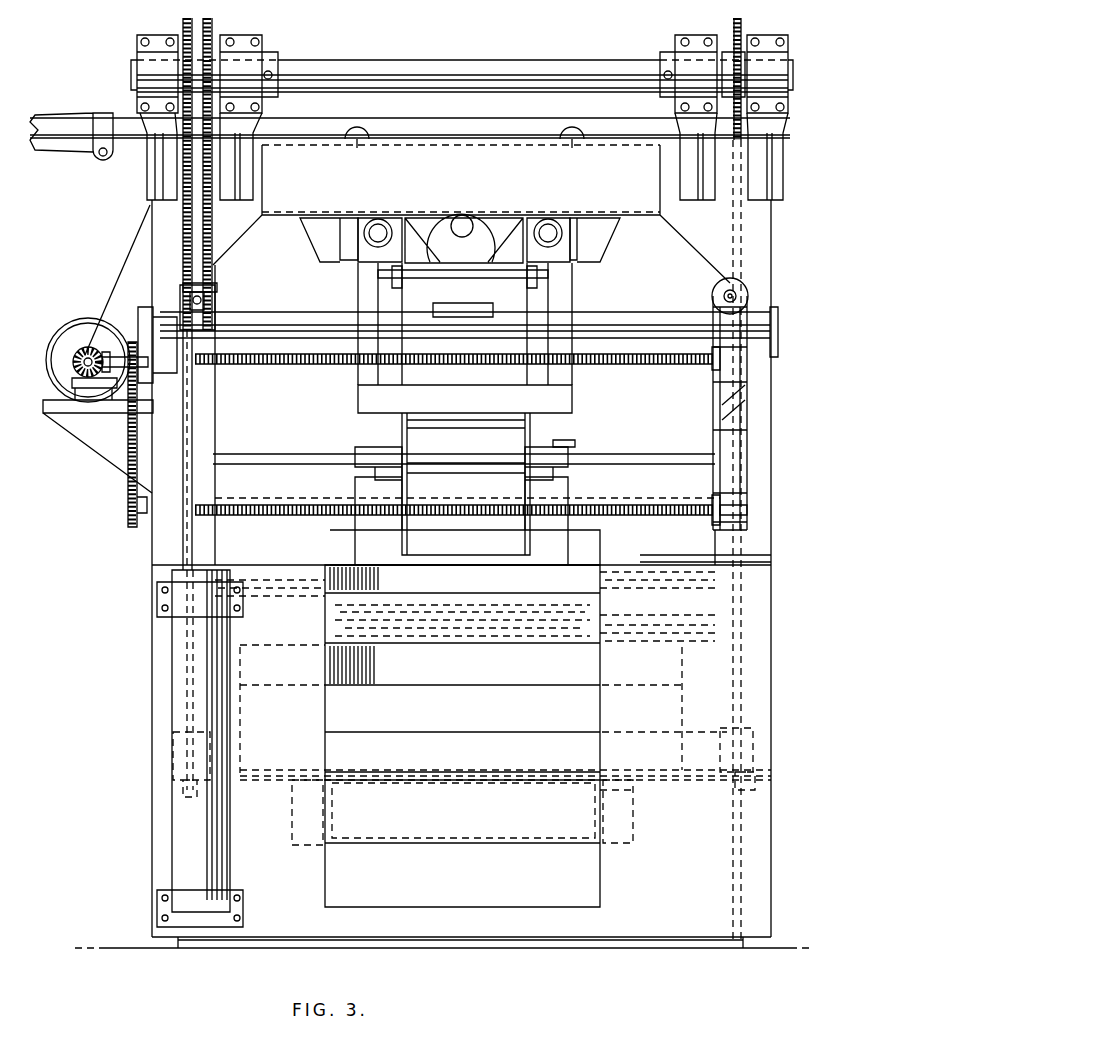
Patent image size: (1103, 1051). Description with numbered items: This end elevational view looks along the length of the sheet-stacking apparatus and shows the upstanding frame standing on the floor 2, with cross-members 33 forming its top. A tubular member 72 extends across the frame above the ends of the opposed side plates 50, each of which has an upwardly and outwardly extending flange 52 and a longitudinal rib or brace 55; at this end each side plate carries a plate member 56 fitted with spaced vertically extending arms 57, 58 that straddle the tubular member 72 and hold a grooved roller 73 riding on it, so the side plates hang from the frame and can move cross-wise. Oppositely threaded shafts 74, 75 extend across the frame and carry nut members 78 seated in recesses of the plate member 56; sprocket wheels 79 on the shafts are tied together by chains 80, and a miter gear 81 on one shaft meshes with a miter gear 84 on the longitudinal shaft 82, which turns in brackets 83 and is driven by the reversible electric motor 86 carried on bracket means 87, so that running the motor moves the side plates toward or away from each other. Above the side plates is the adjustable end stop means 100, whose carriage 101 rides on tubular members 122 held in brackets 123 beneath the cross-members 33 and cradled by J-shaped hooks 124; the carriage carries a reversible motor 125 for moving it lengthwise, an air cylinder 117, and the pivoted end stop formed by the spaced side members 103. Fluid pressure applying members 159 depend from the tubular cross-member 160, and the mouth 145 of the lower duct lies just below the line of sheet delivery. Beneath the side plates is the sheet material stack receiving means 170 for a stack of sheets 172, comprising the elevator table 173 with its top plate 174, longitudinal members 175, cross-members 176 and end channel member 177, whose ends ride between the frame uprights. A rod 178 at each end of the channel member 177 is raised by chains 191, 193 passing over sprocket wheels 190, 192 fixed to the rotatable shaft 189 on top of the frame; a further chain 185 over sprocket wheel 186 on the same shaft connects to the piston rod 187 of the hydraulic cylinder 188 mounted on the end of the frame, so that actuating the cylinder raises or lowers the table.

The floor 2 is at (487, 948).
The cross-members 33 is at (628, 213).
The side plates 50 is at (712, 440).
The flange 52 is at (748, 398).
The longitudinal rib or brace 55 is at (750, 520).
The plate member 56 is at (713, 474).
The vertically extending arm 57 is at (748, 422).
The vertically extending arm 58 is at (778, 347).
The tubular member 72 is at (625, 313).
The grooved rollers 73 is at (712, 296).
The screw threaded shaft 74 is at (292, 366).
The screw threaded shaft 75 is at (596, 516).
The nut member 78 is at (712, 520).
The sprocket wheel 79 is at (134, 340).
The chains 80 is at (128, 490).
The miter gear 81 is at (100, 350).
The shaft or rod 82 is at (90, 388).
The brackets 83 is at (125, 270).
The miter gear 84 is at (72, 338).
The electric motor 86 is at (80, 340).
The bracket means 87 is at (72, 432).
The adjustable end stop means 100 is at (398, 440).
The carriage 101 is at (572, 387).
The side members 103 is at (528, 452).
The air cylinder 117 is at (482, 310).
The tubular members 122 is at (540, 218).
The brackets 123 is at (578, 221).
The J-shaped brackets or hooks 124 is at (598, 247).
The electric motor 125 is at (486, 205).
The mouth or opening 145 is at (545, 444).
The fluid pressure applying members 159 is at (572, 140).
The tubular cross-member 160 is at (482, 125).
The sheet material stack receiving means 170 is at (465, 736).
The stack of sheets 172 is at (688, 640).
The elevator table 173 is at (636, 800).
The top plate 174 is at (553, 776).
The longitudinal members 175 is at (580, 815).
The cross-members 176 is at (292, 812).
The channel member 177 is at (270, 732).
The rod 178 is at (758, 562).
The chain 185 is at (215, 274).
The sprocket wheel 186 is at (213, 24).
The piston rod 187 is at (215, 410).
The hydraulic cylinder 188 is at (175, 738).
The rotatable shaft 189 is at (442, 66).
The second sprocket wheel 190 is at (180, 28).
The chain 191 is at (183, 243).
The sprocket wheel 192 is at (742, 24).
The chain 193 is at (745, 270).